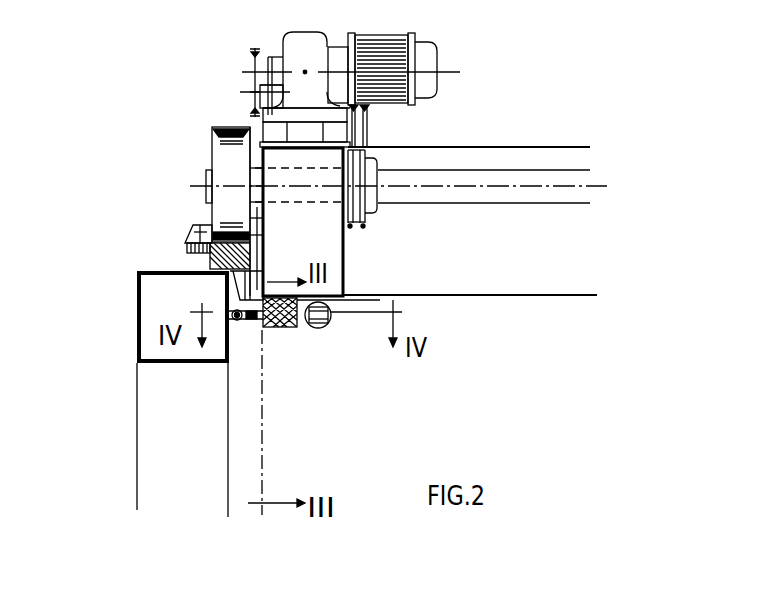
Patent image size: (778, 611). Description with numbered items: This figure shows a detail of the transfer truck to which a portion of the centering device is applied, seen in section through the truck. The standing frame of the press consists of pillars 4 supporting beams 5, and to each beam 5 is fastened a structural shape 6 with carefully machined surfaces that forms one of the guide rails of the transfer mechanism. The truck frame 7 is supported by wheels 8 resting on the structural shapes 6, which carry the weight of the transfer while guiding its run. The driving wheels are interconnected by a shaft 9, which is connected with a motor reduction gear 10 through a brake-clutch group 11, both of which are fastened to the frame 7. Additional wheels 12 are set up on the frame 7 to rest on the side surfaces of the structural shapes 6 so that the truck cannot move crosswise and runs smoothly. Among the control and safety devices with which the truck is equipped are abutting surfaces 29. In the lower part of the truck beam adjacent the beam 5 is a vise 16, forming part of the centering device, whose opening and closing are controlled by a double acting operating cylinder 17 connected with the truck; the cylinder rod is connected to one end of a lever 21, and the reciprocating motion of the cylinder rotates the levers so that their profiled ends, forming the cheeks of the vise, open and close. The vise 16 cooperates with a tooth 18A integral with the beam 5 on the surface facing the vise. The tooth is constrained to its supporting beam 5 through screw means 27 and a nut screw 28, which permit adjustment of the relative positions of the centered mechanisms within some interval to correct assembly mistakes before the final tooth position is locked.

The pillar 4 is at (167, 410).
The beam 5 is at (137, 356).
The structural shape 6 is at (210, 259).
The frame 7 is at (470, 358).
The wheel 8 is at (155, 183).
The shaft 9 is at (469, 152).
The motor reduction gear 10 is at (427, 55).
The brake-clutch group 11 is at (303, 61).
The additional wheel 12 is at (131, 220).
The vise 16 is at (310, 385).
The operating cylinder 17 is at (373, 390).
The tooth 18A is at (282, 383).
The lever 21 is at (338, 390).
The screw means 27 is at (200, 376).
The nut screw 28 is at (238, 322).
The abutting surface 29 is at (155, 298).